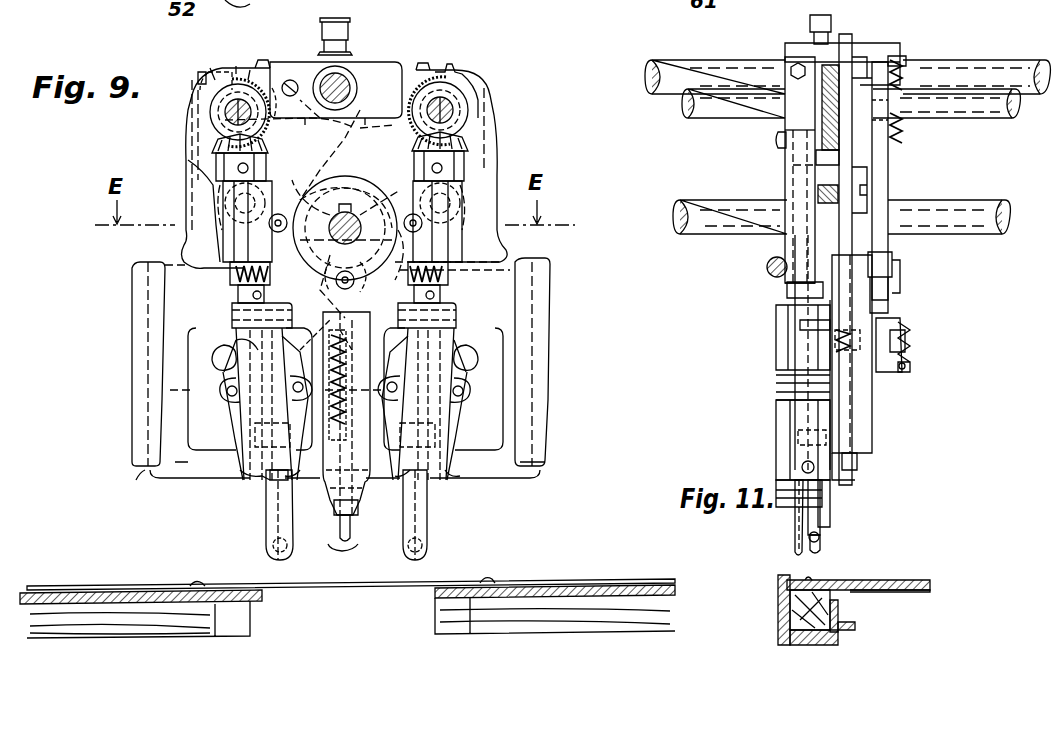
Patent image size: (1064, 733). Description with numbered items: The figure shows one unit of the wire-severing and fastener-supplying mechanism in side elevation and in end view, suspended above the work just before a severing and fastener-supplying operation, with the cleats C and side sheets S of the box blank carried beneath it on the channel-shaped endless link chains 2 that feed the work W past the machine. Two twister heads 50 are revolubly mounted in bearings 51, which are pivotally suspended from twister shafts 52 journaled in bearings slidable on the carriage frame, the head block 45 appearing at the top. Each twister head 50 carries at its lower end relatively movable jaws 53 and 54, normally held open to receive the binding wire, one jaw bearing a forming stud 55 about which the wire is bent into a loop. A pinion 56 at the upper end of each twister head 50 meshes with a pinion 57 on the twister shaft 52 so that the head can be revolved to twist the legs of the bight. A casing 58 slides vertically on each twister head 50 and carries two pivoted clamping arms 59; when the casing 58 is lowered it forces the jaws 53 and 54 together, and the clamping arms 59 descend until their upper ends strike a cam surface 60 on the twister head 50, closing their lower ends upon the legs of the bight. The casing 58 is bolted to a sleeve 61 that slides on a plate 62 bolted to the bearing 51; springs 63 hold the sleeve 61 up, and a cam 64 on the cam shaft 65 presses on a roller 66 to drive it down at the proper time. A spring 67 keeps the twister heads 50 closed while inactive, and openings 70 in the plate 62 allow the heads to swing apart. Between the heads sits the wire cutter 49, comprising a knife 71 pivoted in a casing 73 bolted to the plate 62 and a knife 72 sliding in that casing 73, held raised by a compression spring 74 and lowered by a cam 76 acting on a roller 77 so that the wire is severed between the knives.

In FIG. 11, the endless link chains 2 is at (780, 626).
In FIG. 9, the head block 45 is at (352, 72).
In FIG. 11, the head block 45 is at (965, 70).
In FIG. 9, the wire cutter 49 is at (343, 559).
In FIG. 9, the twister heads 50 is at (270, 518).
In FIG. 11, the twister heads 50 is at (800, 244).
In FIG. 9, the bearings 51 is at (230, 205).
In FIG. 11, the bearings 51 is at (786, 184).
In FIG. 9, the twister shaft 52 is at (230, 110).
In FIG. 11, the twister shaft 52 is at (985, 105).
In FIG. 11, the jaw 53 is at (794, 549).
In FIG. 11, the jaw 54 is at (822, 548).
In FIG. 9, the forming stud 55 is at (294, 546).
In FIG. 11, the forming stud 55 is at (822, 538).
In FIG. 9, the pinion 56 is at (214, 148).
In FIG. 11, the pinion 56 is at (778, 140).
In FIG. 9, the pinion 57 is at (262, 78).
In FIG. 11, the pinion 57 is at (825, 55).
In FIG. 9, the casing 58 is at (232, 316).
In FIG. 11, the casing 58 is at (778, 338).
In FIG. 9, the clamping arms 59 is at (250, 472).
In FIG. 9, the cam surface 60 is at (240, 440).
In FIG. 11, the cam surface 60 is at (790, 432).
In FIG. 9, the sleeve 61 is at (552, 292).
In FIG. 11, the sleeve 61 is at (860, 445).
In FIG. 9, the plate 62 is at (512, 255).
In FIG. 11, the plate 62 is at (858, 465).
In FIG. 11, the springs 63 is at (908, 332).
In FIG. 9, the cam 64 is at (314, 190).
In FIG. 11, the cam 64 is at (880, 164).
In FIG. 9, the cam shaft 65 is at (350, 212).
In FIG. 11, the cam shaft 65 is at (975, 212).
In FIG. 11, the roller 66 is at (900, 258).
In FIG. 9, the spring 67 is at (232, 250).
In FIG. 11, the spring 67 is at (768, 276).
In FIG. 9, the openings 70 is at (165, 428).
In FIG. 9, the cutting knife 71 is at (352, 536).
In FIG. 11, the cutting knife 71 is at (832, 516).
In FIG. 9, the cutting knife 72 is at (358, 516).
In FIG. 9, the casing 73 is at (330, 494).
In FIG. 9, the compression spring 74 is at (325, 376).
In FIG. 9, the cam 76 is at (346, 214).
In FIG. 9, the roller 77 is at (140, 486).
In FIG. 9, the work W is at (525, 582).
In FIG. 11, the work W is at (810, 578).
In FIG. 9, the side sheets S is at (580, 586).
In FIG. 11, the side sheets S is at (905, 580).
In FIG. 9, the cleats C is at (555, 620).